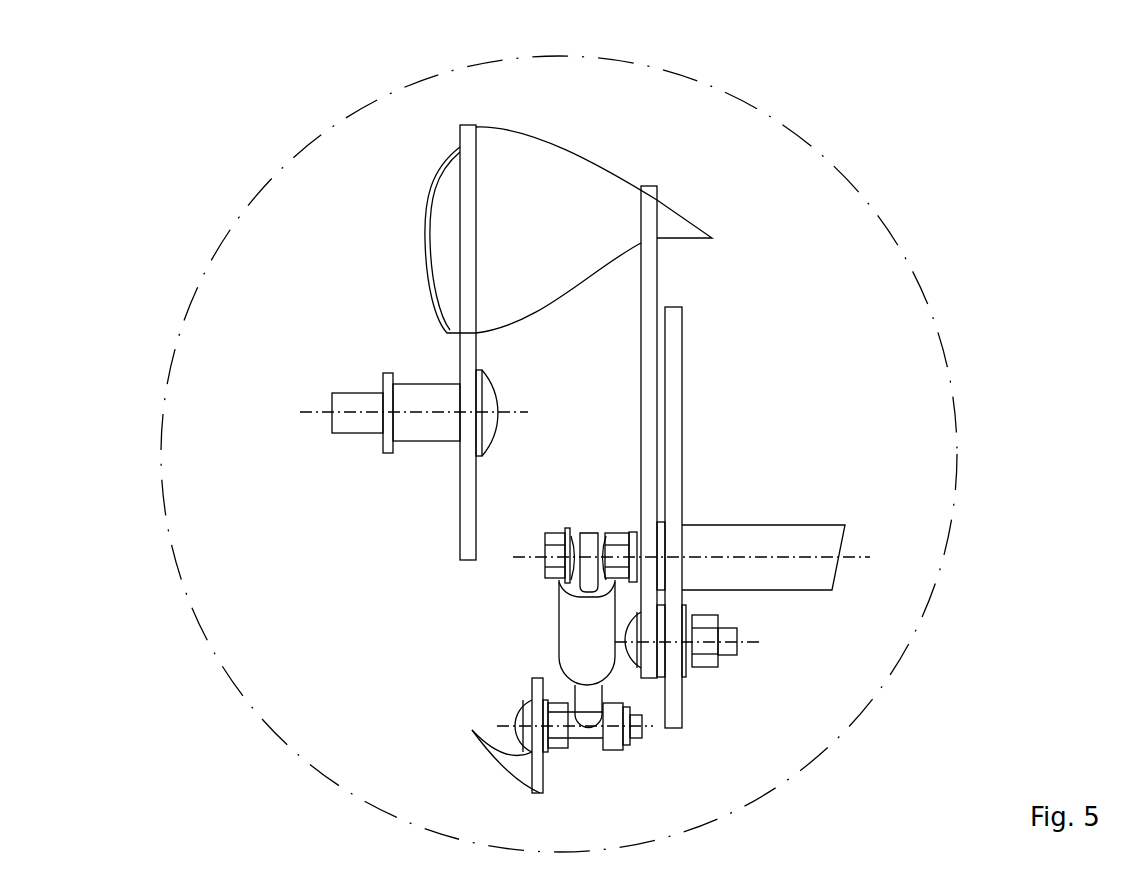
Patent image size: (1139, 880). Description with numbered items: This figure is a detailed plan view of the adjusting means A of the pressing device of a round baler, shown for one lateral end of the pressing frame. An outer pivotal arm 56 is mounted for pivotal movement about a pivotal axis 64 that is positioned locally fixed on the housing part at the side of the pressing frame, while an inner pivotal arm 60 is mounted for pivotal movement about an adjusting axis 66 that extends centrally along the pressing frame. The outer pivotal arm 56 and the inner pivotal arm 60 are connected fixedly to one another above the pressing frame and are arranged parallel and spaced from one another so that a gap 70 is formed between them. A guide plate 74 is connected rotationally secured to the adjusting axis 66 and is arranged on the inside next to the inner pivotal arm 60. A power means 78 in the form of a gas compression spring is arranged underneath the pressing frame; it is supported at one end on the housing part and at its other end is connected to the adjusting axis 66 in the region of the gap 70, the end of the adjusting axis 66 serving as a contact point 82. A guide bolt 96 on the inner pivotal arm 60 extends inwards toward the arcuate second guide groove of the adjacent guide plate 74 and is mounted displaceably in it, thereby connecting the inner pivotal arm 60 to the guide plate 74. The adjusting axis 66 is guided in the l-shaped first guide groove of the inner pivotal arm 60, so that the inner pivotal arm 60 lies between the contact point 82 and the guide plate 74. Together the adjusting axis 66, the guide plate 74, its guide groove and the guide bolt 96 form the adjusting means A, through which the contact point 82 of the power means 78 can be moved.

The outer pivotal arm 56 is at (467, 356).
The inner pivotal arm 60 is at (648, 267).
The pivotal axis 64 is at (420, 402).
The adjusting axis 66 is at (787, 543).
The gap 70 is at (553, 447).
The guide plate 74 is at (675, 369).
The power means 78 is at (583, 647).
The contact point 82 is at (590, 565).
The guide bolt 96 is at (735, 647).
The adjusting means A is at (293, 751).